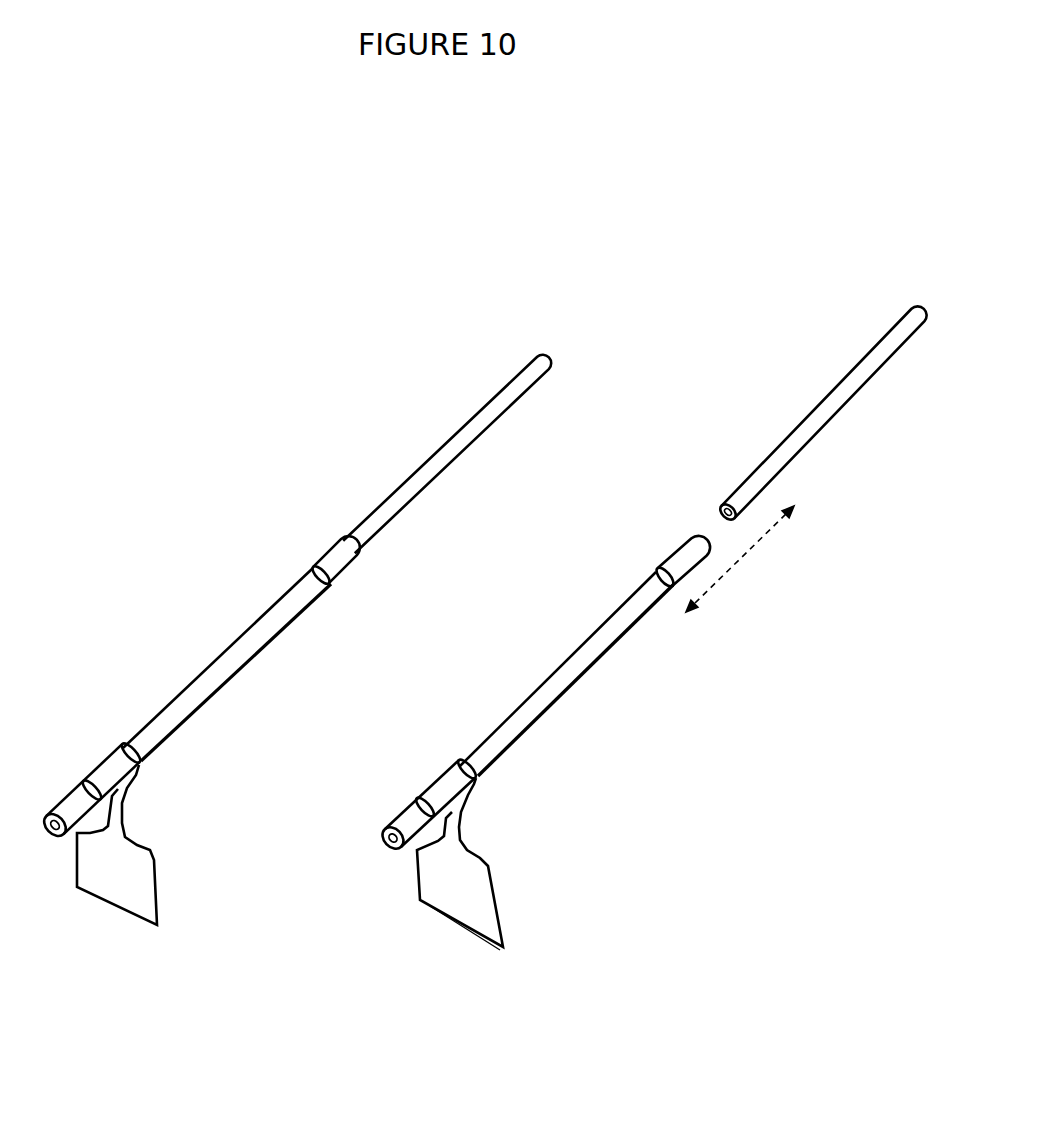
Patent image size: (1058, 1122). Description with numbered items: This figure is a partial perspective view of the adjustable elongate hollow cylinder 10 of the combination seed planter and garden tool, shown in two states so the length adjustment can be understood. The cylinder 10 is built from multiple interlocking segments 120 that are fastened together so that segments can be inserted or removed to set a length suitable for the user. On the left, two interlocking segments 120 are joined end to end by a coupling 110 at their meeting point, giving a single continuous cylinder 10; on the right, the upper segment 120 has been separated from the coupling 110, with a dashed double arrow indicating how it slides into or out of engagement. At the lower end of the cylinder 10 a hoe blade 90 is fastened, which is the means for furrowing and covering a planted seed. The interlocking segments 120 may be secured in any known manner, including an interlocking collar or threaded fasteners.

The elongate hollow cylinder 10 is at (385, 471).
The hoe blade 90 is at (153, 885).
The coupling sleeve 110 is at (361, 565).
The interlocking segments 120 is at (433, 483).